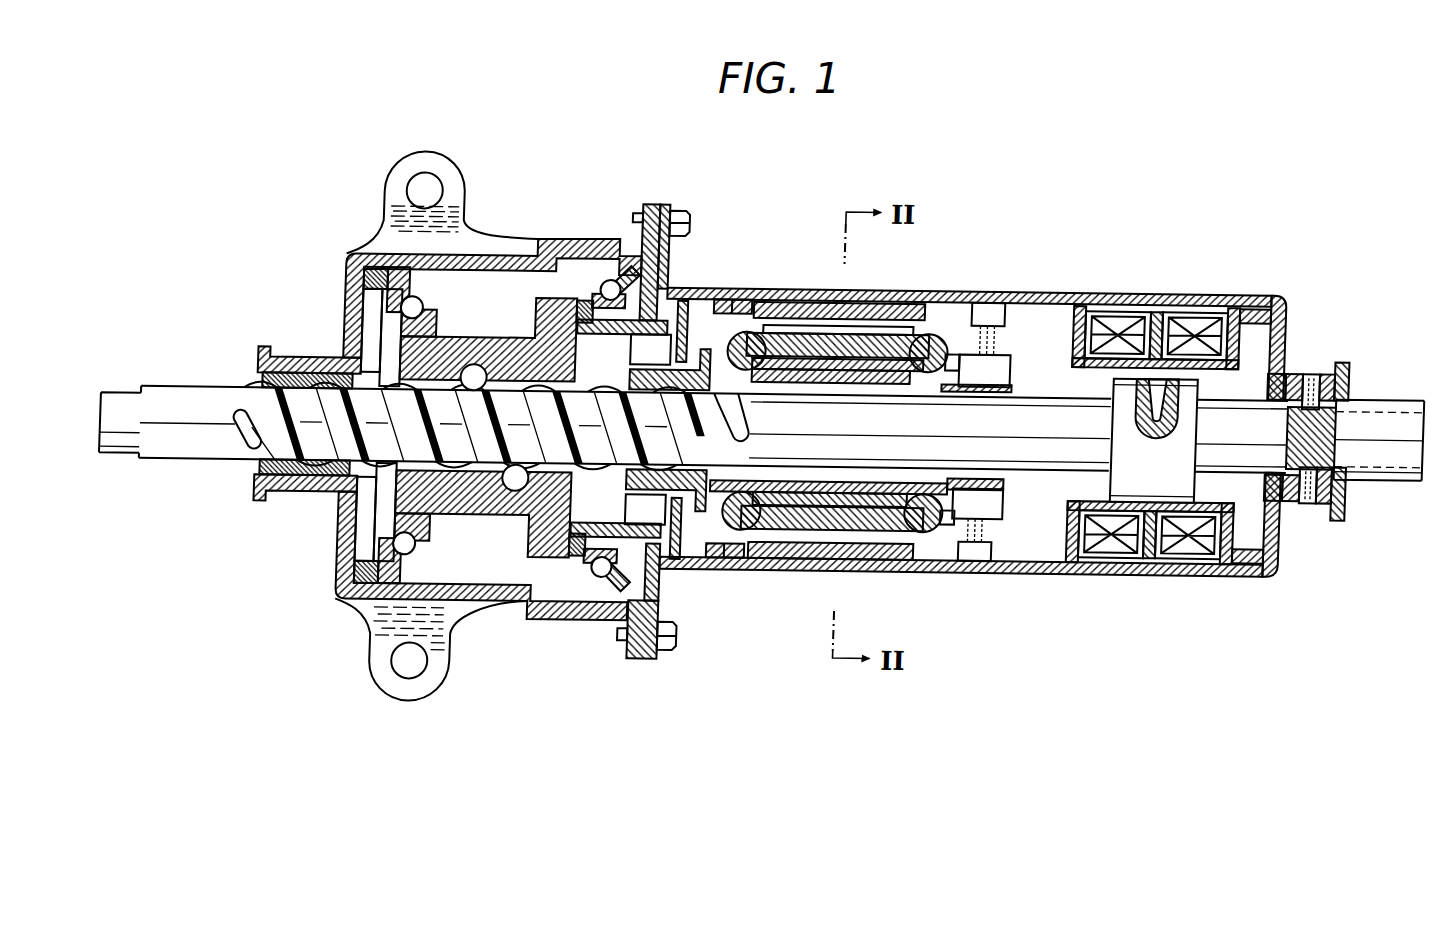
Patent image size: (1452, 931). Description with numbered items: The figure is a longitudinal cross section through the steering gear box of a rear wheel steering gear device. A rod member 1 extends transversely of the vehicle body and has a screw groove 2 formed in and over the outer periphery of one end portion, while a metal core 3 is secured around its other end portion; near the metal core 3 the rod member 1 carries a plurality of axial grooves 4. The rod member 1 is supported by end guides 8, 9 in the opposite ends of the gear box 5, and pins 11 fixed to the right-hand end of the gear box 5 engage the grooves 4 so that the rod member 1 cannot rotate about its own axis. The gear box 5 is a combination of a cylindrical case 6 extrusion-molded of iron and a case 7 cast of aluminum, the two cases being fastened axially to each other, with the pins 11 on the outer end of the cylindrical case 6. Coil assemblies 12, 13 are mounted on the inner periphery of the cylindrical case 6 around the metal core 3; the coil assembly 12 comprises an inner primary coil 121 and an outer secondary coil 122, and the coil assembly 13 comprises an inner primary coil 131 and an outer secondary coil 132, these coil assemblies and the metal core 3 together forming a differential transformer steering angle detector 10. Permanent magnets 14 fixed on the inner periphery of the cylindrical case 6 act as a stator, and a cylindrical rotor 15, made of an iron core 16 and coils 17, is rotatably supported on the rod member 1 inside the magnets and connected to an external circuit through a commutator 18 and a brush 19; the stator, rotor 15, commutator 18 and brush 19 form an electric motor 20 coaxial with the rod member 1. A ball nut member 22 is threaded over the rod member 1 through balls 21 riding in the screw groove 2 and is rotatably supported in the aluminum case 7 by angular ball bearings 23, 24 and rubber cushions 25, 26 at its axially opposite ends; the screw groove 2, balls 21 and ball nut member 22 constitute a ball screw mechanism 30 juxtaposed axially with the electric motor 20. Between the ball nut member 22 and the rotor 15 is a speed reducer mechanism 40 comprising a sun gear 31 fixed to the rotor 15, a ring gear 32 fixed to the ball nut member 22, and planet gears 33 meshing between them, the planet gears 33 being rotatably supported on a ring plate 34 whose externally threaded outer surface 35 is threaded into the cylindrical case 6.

The rod member 1 is at (174, 488).
The screw groove 2 is at (492, 421).
The metal core 3 is at (1118, 432).
The axial grooves 4 is at (1348, 390).
The gear box 5 is at (636, 662).
The cylindrical case 6 is at (1034, 288).
The case 7 is at (503, 261).
The end guide 8 is at (1287, 366).
The end guide 9 is at (298, 362).
The differential transformer steering angle detector 10 is at (1246, 360).
The pins 11 is at (1315, 366).
The coil assembly 12 is at (1108, 312).
The coil assembly 13 is at (1188, 554).
The permanent magnets 14 is at (884, 302).
The cylindrical rotor 15 is at (750, 552).
The iron core 16 is at (812, 530).
The coils 17 is at (816, 333).
The commutator 18 is at (992, 366).
The brush 19 is at (992, 520).
The electric motor 20 is at (936, 323).
The balls 21 is at (472, 368).
The ball nut member 22 is at (517, 520).
The angular ball bearing 23 is at (355, 318).
The angular ball bearing 24 is at (600, 574).
The rubber cushion 25 is at (358, 583).
The rubber cushion 26 is at (618, 264).
The ball screw mechanism 30 is at (446, 562).
The sun gear 31 is at (624, 370).
The ring gear 32 is at (667, 560).
The planet gears 33 is at (630, 510).
The ring plate 34 is at (722, 316).
The externally threaded outer surface 35 is at (690, 562).
The speed reducer mechanism 40 is at (672, 302).
The inner primary coil 121 is at (1150, 345).
The outer secondary coil 122 is at (1118, 566).
The inner primary coil 131 is at (1226, 562).
The outer secondary coil 132 is at (1190, 316).